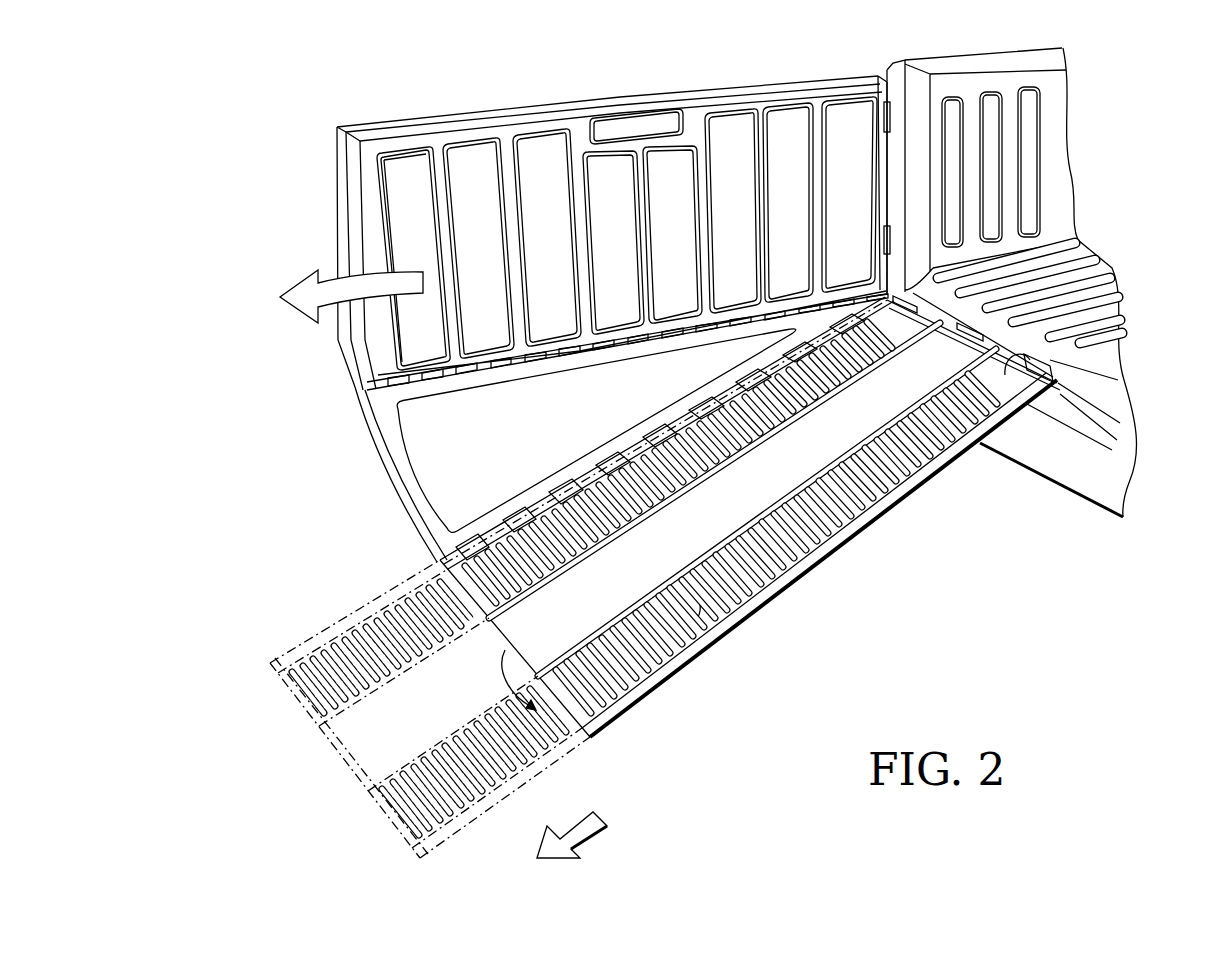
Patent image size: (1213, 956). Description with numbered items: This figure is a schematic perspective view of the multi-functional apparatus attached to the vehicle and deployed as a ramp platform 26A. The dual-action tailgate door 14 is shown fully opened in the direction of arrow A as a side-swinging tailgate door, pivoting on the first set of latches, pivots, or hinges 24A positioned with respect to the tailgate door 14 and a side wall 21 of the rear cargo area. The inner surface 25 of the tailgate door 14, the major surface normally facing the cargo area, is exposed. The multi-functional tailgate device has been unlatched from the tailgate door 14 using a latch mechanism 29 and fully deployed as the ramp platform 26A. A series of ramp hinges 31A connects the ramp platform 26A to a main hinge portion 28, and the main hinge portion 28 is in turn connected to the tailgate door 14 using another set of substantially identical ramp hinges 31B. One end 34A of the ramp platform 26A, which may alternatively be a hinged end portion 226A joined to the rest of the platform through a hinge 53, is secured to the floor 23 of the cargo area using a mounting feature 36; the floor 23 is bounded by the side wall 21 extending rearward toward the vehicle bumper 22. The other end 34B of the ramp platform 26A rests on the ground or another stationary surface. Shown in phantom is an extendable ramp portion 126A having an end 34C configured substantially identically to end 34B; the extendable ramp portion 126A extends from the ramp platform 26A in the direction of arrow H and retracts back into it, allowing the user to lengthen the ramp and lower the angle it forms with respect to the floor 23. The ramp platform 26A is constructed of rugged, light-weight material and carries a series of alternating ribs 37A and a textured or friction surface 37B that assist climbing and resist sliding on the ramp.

The dual-action tailgate door 14 is at (589, 256).
The latch mechanism 29 is at (638, 123).
The inner surface 25 is at (408, 222).
The hinges 24A is at (892, 120).
The side wall 21 is at (997, 68).
The floor 23 is at (1068, 308).
The mounting feature 36 is at (1050, 356).
The end of ramp platform 34A is at (1063, 392).
The hinged end portion 226A is at (1010, 375).
The hinge 53 is at (975, 458).
The vehicle bumper 22 is at (1098, 482).
The ramp platform 26A is at (748, 517).
The textured surface or friction surface 37B is at (712, 600).
The ribs 37A is at (717, 637).
The other end of ramp platform 34B is at (562, 733).
The extendable ramp portion 126A is at (395, 709).
The end of extendable ramp portion 34C is at (337, 760).
The main hinge portion 28 is at (407, 477).
The ramp hinges 31B is at (457, 376).
The ramp hinges 31A is at (523, 507).
The arrow A is at (298, 313).
The arrow H is at (592, 837).